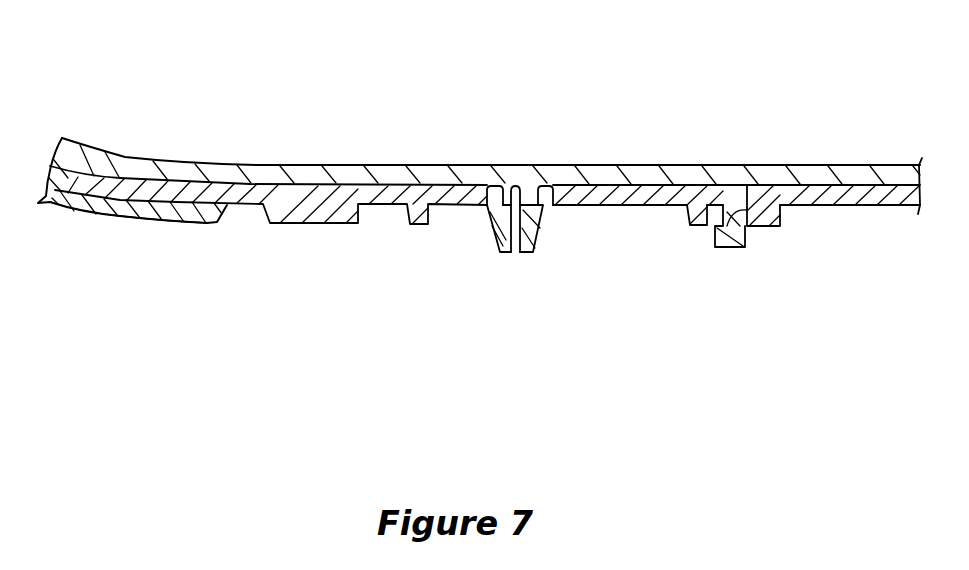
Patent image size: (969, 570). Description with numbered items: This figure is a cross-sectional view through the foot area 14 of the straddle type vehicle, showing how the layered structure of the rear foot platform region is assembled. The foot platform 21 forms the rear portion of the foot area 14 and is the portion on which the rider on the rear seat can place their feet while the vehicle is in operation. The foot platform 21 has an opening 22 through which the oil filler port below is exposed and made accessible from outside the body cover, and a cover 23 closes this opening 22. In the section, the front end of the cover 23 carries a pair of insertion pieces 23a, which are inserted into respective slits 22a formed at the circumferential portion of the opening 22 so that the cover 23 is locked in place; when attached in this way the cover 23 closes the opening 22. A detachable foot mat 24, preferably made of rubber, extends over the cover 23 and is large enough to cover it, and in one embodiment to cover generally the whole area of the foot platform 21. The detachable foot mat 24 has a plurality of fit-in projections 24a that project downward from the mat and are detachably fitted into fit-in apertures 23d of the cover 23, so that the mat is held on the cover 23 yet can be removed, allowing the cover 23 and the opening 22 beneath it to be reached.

The foot area 14 is at (86, 213).
The foot platform 21 is at (140, 224).
The opening 22 is at (224, 214).
The slit 22a is at (757, 228).
The cover 23 is at (307, 198).
The insertion piece 23a is at (783, 221).
The fit-in aperture 23d is at (491, 206).
The detachable foot mat 24 is at (390, 170).
The fit-in projection 24a is at (508, 190).